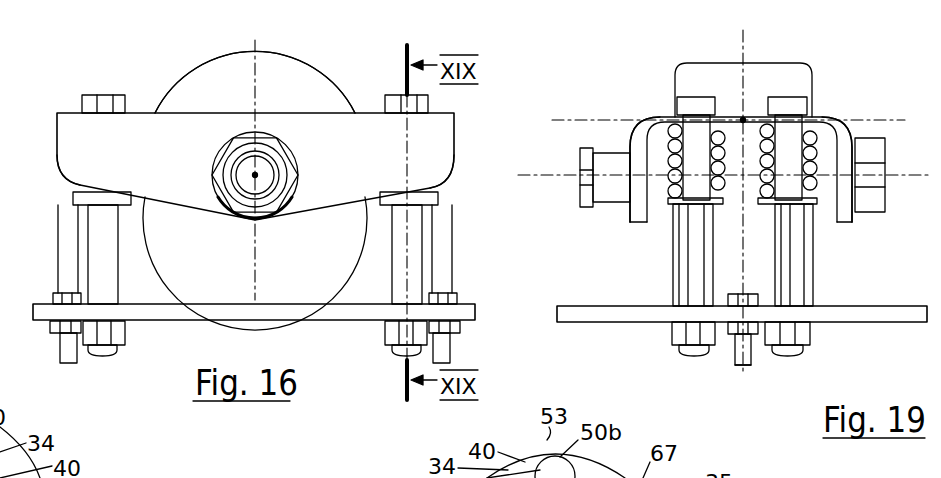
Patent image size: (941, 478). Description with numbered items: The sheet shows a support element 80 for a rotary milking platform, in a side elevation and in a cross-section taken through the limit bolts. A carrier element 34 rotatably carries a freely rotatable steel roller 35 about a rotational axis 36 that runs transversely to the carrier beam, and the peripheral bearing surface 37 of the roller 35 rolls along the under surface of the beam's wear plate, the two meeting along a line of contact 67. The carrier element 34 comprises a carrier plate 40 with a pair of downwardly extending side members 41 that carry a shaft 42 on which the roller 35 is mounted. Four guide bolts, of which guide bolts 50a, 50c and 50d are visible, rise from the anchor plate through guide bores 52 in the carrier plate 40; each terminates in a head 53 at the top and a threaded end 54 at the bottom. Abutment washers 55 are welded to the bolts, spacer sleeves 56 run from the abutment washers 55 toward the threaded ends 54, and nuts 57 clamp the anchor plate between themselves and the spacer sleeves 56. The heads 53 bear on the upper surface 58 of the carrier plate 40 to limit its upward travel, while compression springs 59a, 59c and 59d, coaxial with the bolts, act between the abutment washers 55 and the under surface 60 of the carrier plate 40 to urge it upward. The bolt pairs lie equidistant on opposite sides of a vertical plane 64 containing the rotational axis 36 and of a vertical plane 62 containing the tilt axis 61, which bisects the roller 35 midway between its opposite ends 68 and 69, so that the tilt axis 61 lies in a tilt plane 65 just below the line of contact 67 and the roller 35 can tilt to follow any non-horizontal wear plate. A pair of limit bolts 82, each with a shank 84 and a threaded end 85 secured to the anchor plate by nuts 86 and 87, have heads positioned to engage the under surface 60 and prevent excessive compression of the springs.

In FIG. 16, the carrier element 34 is at (65, 128).
In FIG. 19, the carrier element 34 is at (832, 117).
In FIG. 16, the roller 35 is at (285, 270).
In FIG. 19, the roller 35 is at (770, 68).
In FIG. 16, the rotational axis 36 is at (259, 176).
In FIG. 19, the rotational axis 36 is at (556, 177).
In FIG. 16, the peripheral bearing surface 37 is at (278, 62).
In FIG. 19, the peripheral bearing surface 37 is at (685, 85).
In FIG. 19, the carrier plate 40 is at (654, 115).
In FIG. 16, the side members 41 is at (198, 101).
In FIG. 19, the side members 41 is at (641, 218).
In FIG. 16, the shaft 42 is at (268, 182).
In FIG. 19, the shaft 42 is at (579, 190).
In FIG. 16, the guide bolt 50a is at (102, 357).
In FIG. 16, the guide bolt 50c is at (403, 358).
In FIG. 19, the guide bolt 50c is at (702, 348).
In FIG. 19, the guide bolt 50d is at (789, 354).
In FIG. 19, the guide bores 52 is at (733, 119).
In FIG. 16, the heads 53 is at (105, 97).
In FIG. 19, the heads 53 is at (684, 108).
In FIG. 16, the threaded ends 54 is at (115, 350).
In FIG. 19, the threaded ends 54 is at (699, 346).
In FIG. 16, the abutment washers 55 is at (86, 213).
In FIG. 19, the abutment washers 55 is at (692, 212).
In FIG. 16, the spacer sleeves 56 is at (95, 258).
In FIG. 19, the spacer sleeves 56 is at (672, 297).
In FIG. 16, the nuts 57 is at (109, 330).
In FIG. 19, the nuts 57 is at (673, 334).
In FIG. 16, the upper surface 58 is at (360, 112).
In FIG. 19, the upper surface 58 is at (825, 117).
In FIG. 16, the compression spring 59a is at (76, 189).
In FIG. 19, the compression spring 59c is at (664, 153).
In FIG. 16, the compression spring 59d is at (14, 156).
In FIG. 19, the compression spring 59d is at (812, 156).
In FIG. 19, the under surface 60 is at (813, 161).
In FIG. 19, the tilt axis 61 is at (741, 118).
In FIG. 19, the vertical plane 62 is at (742, 376).
In FIG. 16, the vertical plane 64 is at (255, 322).
In FIG. 19, the vertical plane 64 is at (742, 314).
In FIG. 19, the tilt plane 65 is at (883, 118).
In FIG. 19, the line of contact 67 is at (686, 65).
In FIG. 16, the end of roller 68 is at (222, 263).
In FIG. 19, the end of roller 68 is at (672, 245).
In FIG. 19, the end of roller 69 is at (812, 243).
In FIG. 16, the support element 80 is at (114, 59).
In FIG. 19, the support element 80 is at (576, 58).
In FIG. 16, the limit bolts 82 is at (67, 226).
In FIG. 19, the limit bolts 82 is at (745, 346).
In FIG. 16, the shank 84 is at (64, 183).
In FIG. 16, the threaded end 85 is at (71, 362).
In FIG. 19, the threaded end 85 is at (750, 354).
In FIG. 16, the nut 86 is at (77, 297).
In FIG. 19, the nut 86 is at (760, 295).
In FIG. 16, the nut 87 is at (55, 327).
In FIG. 19, the nut 87 is at (736, 336).